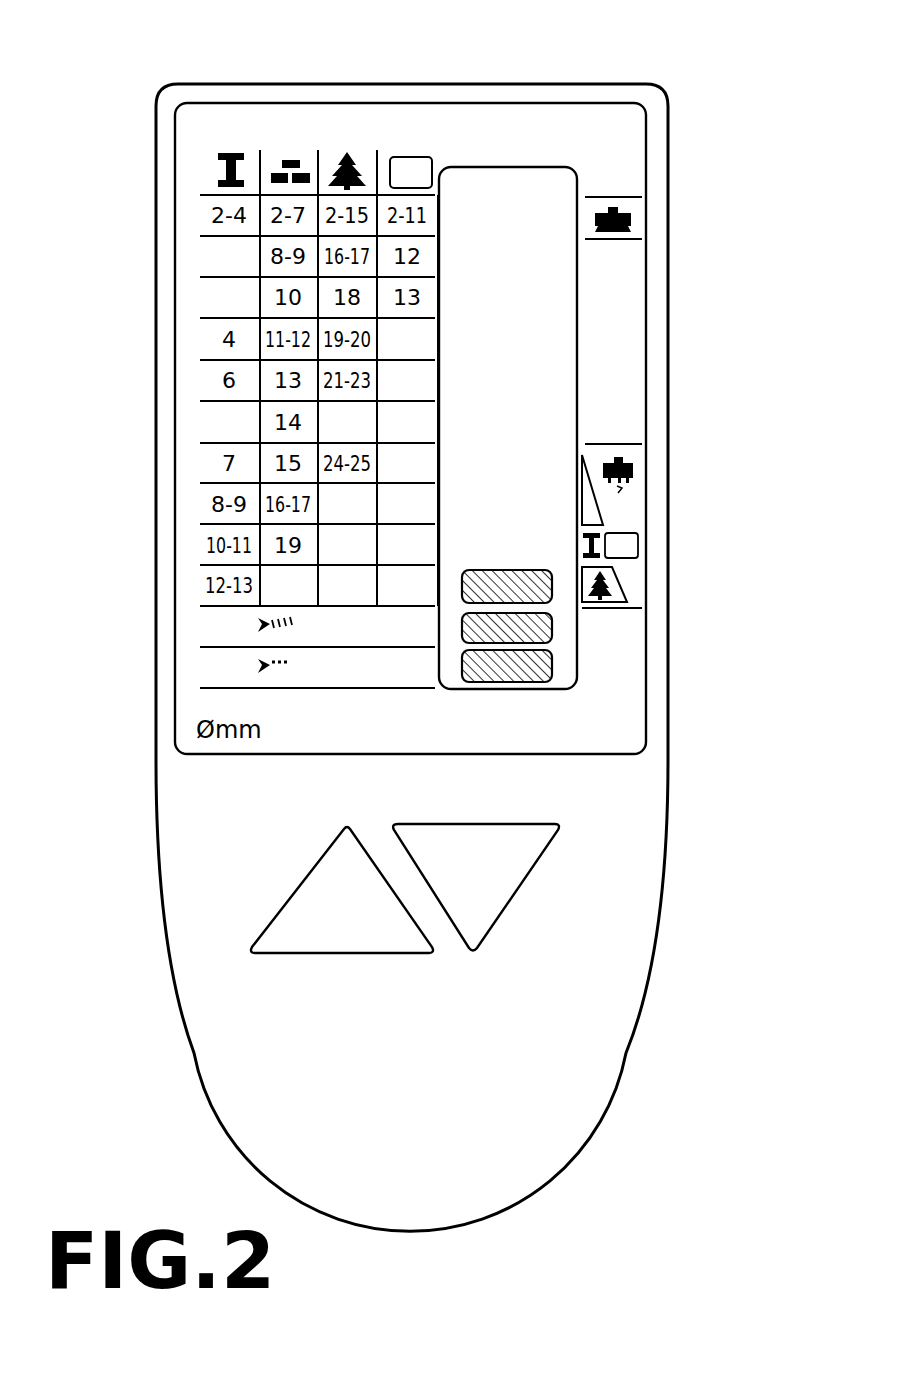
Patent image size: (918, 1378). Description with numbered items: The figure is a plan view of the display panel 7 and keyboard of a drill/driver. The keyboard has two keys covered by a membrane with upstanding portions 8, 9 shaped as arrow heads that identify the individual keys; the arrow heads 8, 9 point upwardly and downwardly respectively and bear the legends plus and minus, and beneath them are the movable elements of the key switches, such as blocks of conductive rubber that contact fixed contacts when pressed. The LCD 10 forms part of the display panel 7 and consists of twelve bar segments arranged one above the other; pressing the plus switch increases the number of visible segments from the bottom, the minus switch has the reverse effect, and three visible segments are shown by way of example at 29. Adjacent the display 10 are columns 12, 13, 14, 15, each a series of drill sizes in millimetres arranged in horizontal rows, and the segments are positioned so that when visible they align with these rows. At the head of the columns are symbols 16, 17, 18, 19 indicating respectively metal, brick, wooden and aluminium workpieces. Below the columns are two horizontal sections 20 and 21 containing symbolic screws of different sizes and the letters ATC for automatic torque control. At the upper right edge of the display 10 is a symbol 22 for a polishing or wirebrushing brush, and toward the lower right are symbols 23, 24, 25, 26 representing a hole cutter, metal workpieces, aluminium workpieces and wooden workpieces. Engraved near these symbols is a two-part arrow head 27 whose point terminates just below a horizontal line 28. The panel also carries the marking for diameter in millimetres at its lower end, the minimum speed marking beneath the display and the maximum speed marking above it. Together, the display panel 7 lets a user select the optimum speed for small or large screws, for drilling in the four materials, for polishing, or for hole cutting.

The display panel 7 is at (686, 345).
The upstanding portion 8 is at (292, 896).
The upstanding portion 9 is at (508, 877).
The LCD 10 is at (521, 369).
The column 12 is at (232, 72).
The column 13 is at (288, 72).
The column 14 is at (350, 72).
The column 15 is at (405, 72).
The symbol 16 is at (220, 172).
The symbol 17 is at (277, 160).
The symbol 18 is at (352, 160).
The symbol 19 is at (415, 157).
The horizontal section 20 is at (192, 626).
The horizontal section 21 is at (192, 667).
The symbol 22 is at (633, 218).
The symbol 23 is at (636, 470).
The symbol 24 is at (583, 547).
The symbol 25 is at (638, 545).
The symbol 26 is at (608, 585).
The two-part arrow head 27 is at (605, 515).
The horizontal line 28 is at (622, 444).
The visible segments 29 is at (552, 600).